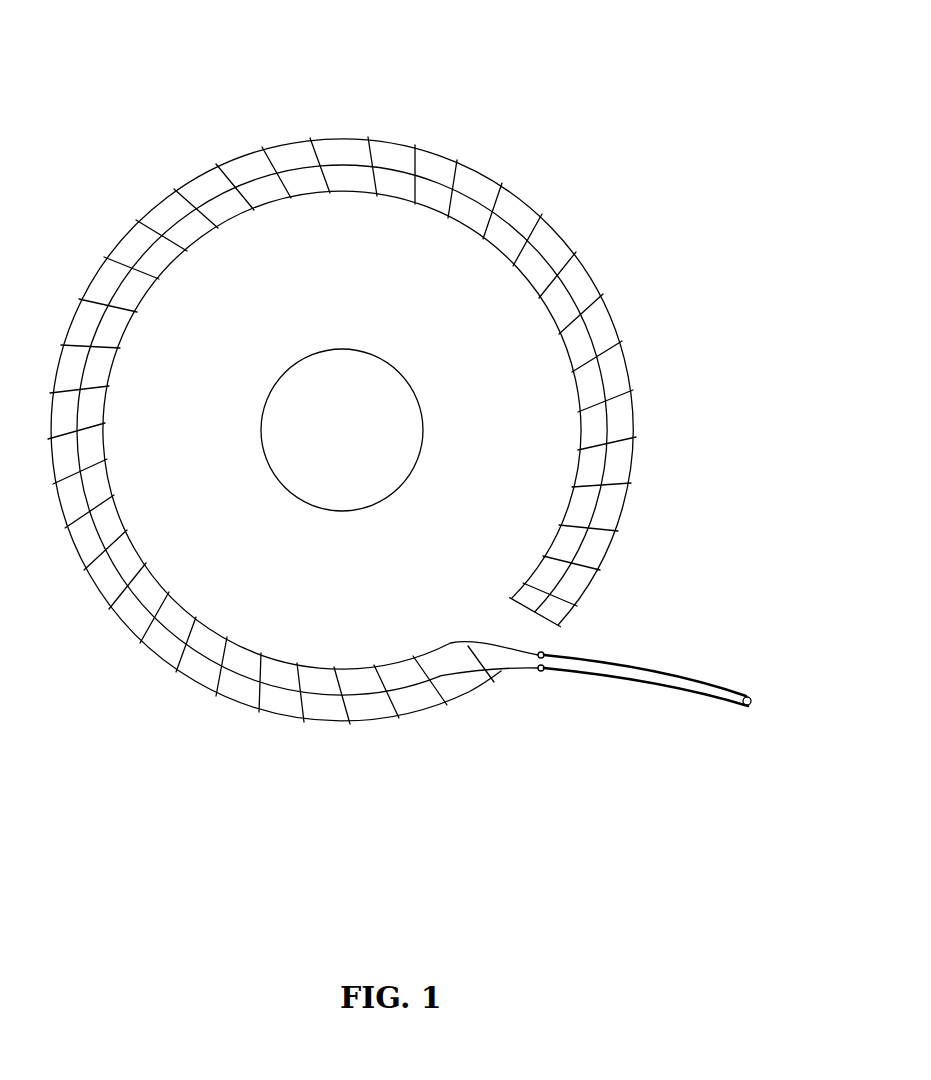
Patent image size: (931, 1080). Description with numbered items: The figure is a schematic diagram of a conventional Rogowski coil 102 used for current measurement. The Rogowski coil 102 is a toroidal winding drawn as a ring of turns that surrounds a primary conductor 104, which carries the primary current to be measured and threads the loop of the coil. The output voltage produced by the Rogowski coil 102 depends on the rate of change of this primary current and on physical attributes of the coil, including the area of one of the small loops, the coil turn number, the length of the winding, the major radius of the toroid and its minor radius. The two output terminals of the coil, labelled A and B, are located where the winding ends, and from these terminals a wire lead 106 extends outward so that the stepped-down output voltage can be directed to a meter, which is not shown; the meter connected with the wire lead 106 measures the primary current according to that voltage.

The Rogowski coil 102 is at (332, 138).
The primary conductor 104 is at (405, 376).
The wire lead 106 is at (698, 705).